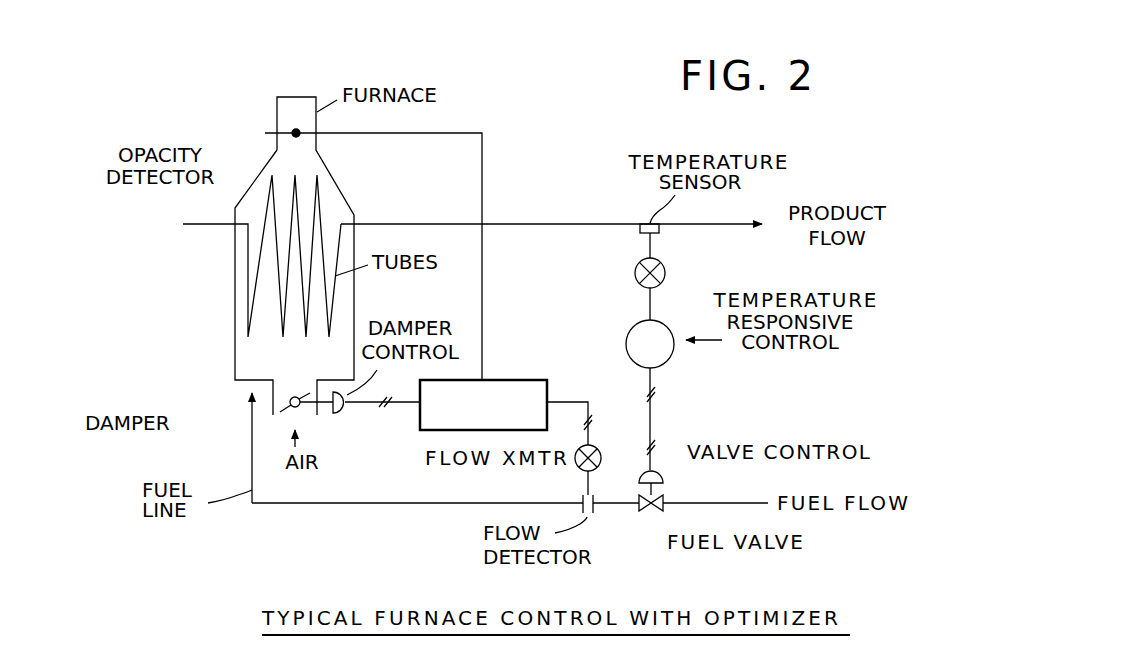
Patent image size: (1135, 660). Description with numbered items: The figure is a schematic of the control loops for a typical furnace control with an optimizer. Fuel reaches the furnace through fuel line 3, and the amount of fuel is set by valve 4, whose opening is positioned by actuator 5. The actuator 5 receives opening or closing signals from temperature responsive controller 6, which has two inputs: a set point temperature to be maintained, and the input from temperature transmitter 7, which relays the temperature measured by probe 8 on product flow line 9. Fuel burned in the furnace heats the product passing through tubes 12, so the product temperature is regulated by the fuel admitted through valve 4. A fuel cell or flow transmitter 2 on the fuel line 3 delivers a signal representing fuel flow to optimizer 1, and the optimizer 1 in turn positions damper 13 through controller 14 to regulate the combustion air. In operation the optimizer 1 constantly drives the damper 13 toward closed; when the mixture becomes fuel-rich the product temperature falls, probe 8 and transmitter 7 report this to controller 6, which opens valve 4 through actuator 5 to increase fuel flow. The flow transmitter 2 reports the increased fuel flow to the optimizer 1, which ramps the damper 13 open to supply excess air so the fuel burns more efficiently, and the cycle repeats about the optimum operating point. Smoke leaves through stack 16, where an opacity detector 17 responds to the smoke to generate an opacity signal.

The optimizer 1 is at (523, 378).
The flow transmitter 2 is at (603, 453).
The fuel line 3 is at (343, 502).
The valve 4 is at (651, 512).
The actuator 5 is at (663, 480).
The temperature responsive controller 6 is at (707, 302).
The temperature transmitter 7 is at (665, 273).
The temperature probe 8 is at (658, 230).
The product flow line 9 is at (542, 223).
The tubes 12 is at (320, 208).
The damper 13 is at (288, 410).
The damper controller 14 is at (360, 414).
The stack 16 is at (303, 100).
The opacity detector 17 is at (290, 138).